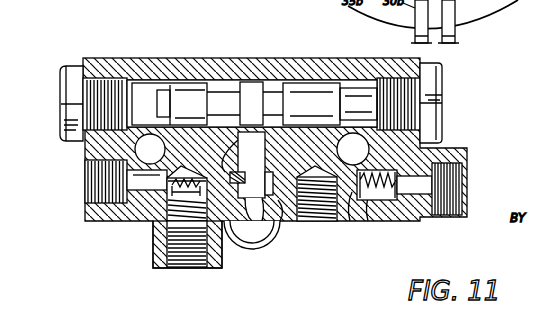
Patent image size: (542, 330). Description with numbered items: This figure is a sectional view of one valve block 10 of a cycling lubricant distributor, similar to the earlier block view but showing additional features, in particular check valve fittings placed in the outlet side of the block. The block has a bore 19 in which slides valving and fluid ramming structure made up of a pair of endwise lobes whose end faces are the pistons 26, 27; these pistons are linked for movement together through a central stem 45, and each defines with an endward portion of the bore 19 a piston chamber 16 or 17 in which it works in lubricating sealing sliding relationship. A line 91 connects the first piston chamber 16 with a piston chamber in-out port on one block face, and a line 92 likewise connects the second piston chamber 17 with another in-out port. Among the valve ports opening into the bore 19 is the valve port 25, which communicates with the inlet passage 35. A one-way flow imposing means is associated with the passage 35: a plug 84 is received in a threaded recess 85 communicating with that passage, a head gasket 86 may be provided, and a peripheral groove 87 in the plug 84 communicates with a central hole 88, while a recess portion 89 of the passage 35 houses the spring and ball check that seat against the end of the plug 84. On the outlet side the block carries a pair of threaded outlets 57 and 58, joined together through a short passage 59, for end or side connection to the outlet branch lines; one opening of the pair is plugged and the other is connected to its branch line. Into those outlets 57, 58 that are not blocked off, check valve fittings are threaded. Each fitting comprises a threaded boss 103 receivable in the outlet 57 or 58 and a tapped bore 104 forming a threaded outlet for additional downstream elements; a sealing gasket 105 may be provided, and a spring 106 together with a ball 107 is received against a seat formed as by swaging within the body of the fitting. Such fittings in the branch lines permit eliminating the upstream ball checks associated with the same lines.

The valve block 10 is at (197, 65).
The first piston chamber 16 is at (138, 95).
The second piston chamber 17 is at (392, 86).
The bore 19 is at (247, 80).
The valve port 25 is at (240, 142).
The piston 26 is at (165, 92).
The piston 27 is at (407, 57).
The inlet passage 35 is at (260, 197).
The central stem 45 is at (310, 100).
The threaded outlet 57 is at (85, 188).
The threaded outlet 58 is at (328, 223).
The short passage 59 is at (357, 228).
The plug 84 is at (278, 230).
The threaded recess 85 is at (268, 246).
The head gasket 86 is at (275, 243).
The peripheral groove 87 is at (212, 215).
The central hole 88 is at (268, 168).
The recess portion 89 is at (268, 147).
The line 91 is at (121, 95).
The line 92 is at (437, 95).
The threaded boss 103 is at (416, 225).
The tapped bore 104 is at (467, 172).
The sealing gasket 105 is at (157, 228).
The spring 106 is at (180, 267).
The ball 107 is at (183, 186).